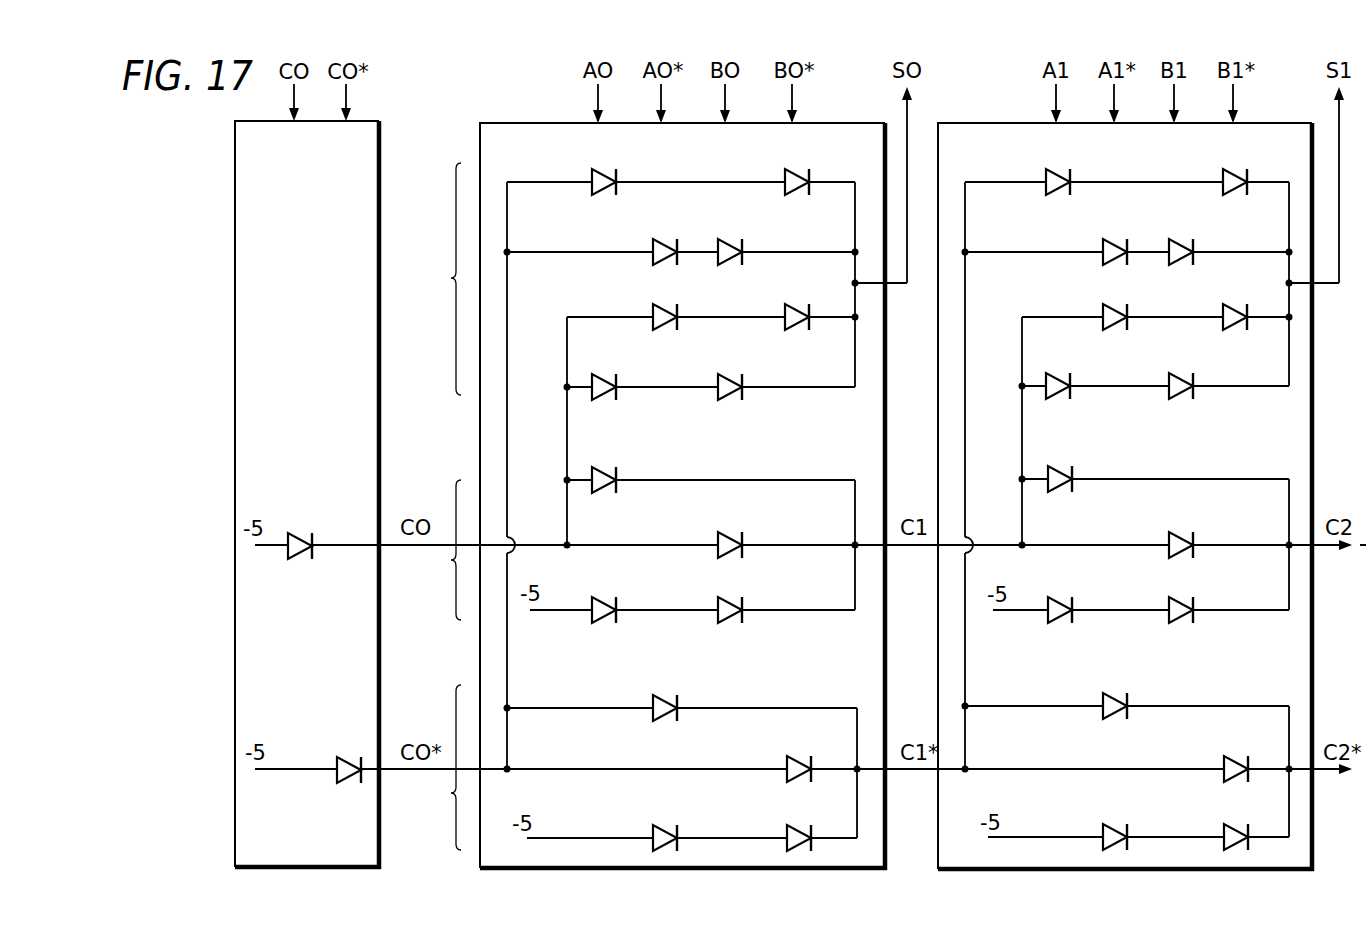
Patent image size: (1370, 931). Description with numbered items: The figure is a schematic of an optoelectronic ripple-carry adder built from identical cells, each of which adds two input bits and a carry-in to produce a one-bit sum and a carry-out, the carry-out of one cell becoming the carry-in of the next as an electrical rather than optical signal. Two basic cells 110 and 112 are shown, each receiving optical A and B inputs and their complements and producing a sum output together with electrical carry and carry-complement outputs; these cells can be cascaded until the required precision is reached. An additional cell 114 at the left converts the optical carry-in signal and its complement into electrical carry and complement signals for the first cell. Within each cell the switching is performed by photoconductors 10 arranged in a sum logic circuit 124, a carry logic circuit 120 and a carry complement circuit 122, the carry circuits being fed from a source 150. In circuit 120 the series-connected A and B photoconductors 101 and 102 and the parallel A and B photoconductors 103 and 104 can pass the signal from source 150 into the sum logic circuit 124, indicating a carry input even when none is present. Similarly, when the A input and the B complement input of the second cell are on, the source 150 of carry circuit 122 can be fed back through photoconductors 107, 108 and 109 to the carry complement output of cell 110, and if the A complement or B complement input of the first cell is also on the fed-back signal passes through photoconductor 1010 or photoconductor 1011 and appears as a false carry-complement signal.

The photoconductor 10 is at (298, 533).
The A photoconductor 101 is at (596, 600).
The B photoconductor 102 is at (733, 600).
The A photoconductor 103 is at (600, 478).
The B photoconductor 104 is at (718, 540).
The photoconductor 107 is at (1108, 834).
The photoconductor 108 is at (1232, 834).
The photoconductor 109 is at (1228, 765).
The photoconductor 1010 is at (673, 705).
The photoconductor 1011 is at (800, 765).
The basic cell 110 is at (830, 123).
The basic cell 112 is at (1265, 123).
The additional cell 114 is at (378, 121).
The carry logic circuit 120 is at (429, 550).
The carry circuit 122 is at (429, 767).
The sum logic circuit 124 is at (430, 279).
The source 150 is at (553, 612).